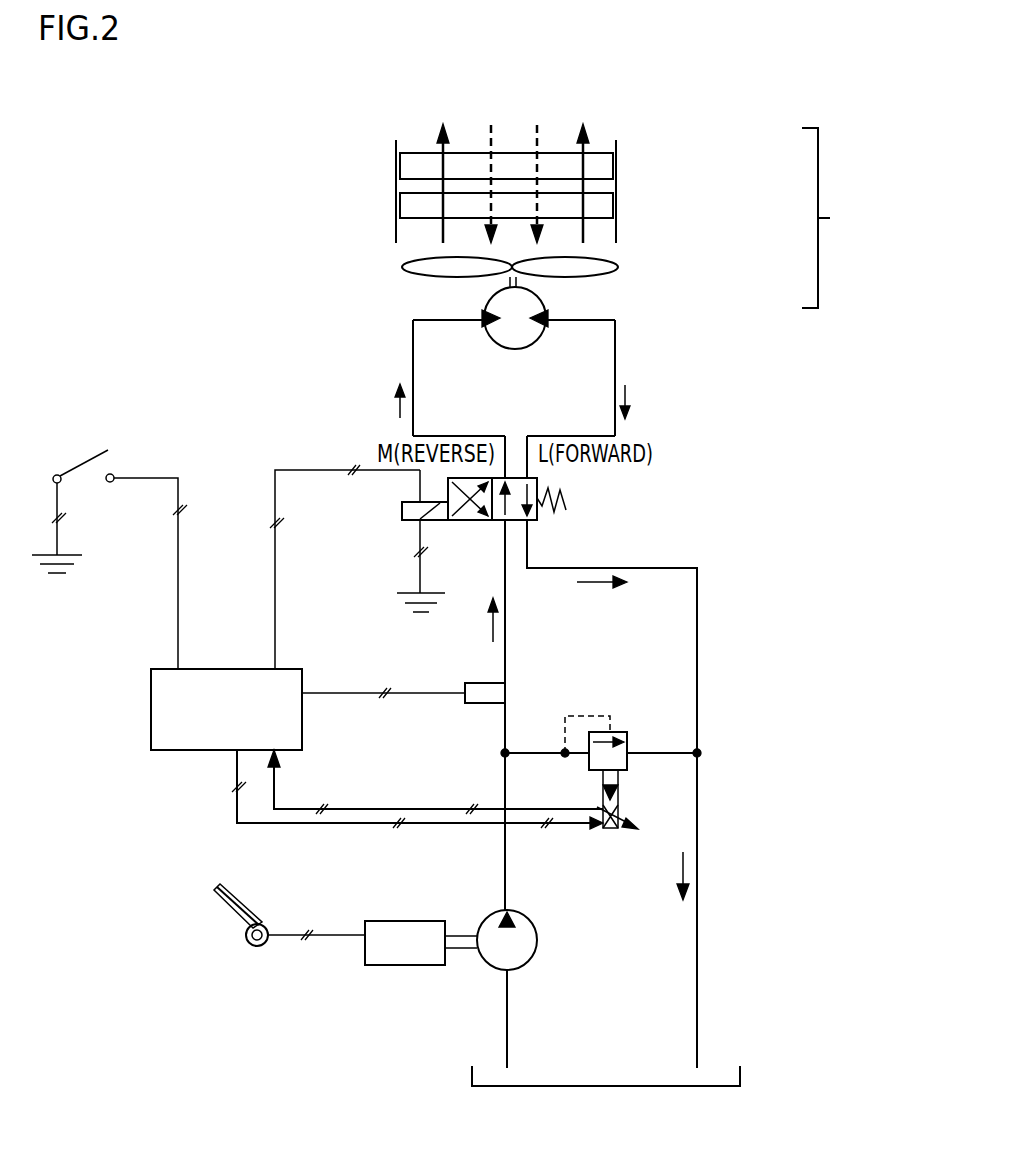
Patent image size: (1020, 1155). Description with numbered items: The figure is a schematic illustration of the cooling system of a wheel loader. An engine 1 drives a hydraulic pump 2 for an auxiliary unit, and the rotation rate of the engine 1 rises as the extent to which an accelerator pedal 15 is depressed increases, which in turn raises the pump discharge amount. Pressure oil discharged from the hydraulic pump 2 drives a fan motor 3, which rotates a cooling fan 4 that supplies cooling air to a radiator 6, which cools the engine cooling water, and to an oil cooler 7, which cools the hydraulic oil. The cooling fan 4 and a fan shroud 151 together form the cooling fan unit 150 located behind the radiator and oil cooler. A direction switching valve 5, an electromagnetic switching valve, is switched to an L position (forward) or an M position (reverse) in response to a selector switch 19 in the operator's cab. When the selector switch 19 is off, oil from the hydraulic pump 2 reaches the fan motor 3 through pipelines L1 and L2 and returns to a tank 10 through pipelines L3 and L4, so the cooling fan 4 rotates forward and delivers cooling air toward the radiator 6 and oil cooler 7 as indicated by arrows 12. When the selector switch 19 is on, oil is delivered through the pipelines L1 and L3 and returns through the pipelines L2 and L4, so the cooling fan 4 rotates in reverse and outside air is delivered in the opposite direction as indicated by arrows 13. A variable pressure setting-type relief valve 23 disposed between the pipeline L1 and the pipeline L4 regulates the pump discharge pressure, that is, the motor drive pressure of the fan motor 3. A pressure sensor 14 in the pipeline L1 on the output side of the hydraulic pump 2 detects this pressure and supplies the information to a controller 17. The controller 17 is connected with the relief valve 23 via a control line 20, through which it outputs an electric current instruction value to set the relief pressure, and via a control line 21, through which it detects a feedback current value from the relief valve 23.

The engine 1 is at (365, 950).
The hydraulic pump 2 is at (483, 965).
The fan motor 3 is at (492, 340).
The cooling fan 4 is at (618, 267).
The direction switching valve 5 is at (540, 493).
The radiator 6 is at (613, 207).
The oil cooler 7 is at (613, 170).
The tank 10 is at (470, 1080).
The arrows 12 is at (440, 232).
The arrows 13 is at (485, 176).
The pressure sensor 14 is at (480, 704).
The accelerator pedal 15 is at (232, 924).
The controller 17 is at (160, 755).
The selector switch 19 is at (80, 458).
The control line 20 is at (370, 828).
The control line 21 is at (348, 808).
The relief valve 23 is at (628, 730).
The cooling fan unit 150 is at (843, 218).
The fan shroud 151 is at (616, 228).
The pipeline L1 is at (505, 870).
The pipeline L2 is at (413, 350).
The pipeline L3 is at (615, 372).
The pipeline L4 is at (565, 565).